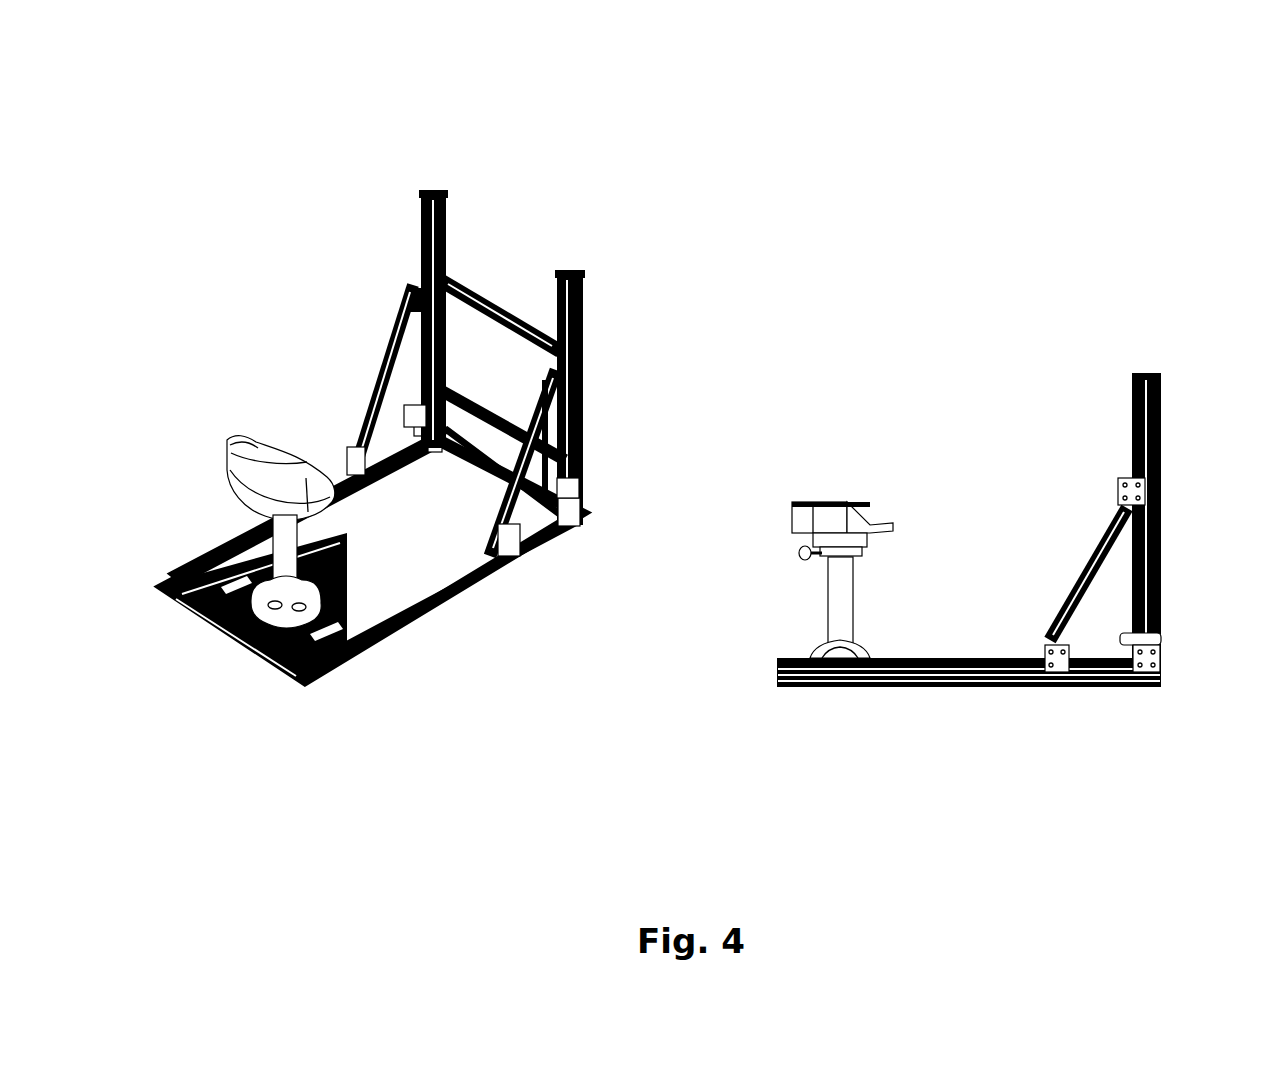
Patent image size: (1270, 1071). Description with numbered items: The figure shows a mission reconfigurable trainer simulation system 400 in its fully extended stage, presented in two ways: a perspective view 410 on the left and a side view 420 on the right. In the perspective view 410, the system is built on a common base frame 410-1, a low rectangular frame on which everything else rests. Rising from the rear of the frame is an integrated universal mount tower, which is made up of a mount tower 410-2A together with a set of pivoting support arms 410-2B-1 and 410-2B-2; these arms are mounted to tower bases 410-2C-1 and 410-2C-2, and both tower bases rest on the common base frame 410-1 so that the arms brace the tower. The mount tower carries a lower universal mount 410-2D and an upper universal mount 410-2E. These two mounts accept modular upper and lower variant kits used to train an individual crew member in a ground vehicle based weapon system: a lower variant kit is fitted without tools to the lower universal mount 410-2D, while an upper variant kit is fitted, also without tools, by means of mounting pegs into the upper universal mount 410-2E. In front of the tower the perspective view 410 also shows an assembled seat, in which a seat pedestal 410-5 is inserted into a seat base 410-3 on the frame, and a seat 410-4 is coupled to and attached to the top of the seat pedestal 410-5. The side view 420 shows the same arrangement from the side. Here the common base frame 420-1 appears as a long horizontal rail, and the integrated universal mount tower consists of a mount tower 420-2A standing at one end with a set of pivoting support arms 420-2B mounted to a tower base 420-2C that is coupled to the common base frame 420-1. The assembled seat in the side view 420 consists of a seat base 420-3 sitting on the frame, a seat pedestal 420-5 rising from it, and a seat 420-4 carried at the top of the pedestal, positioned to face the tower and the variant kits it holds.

The mission reconfigurable trainer simulation system 400 is at (1212, 60).
The perspective view 410 is at (688, 591).
The common base frame 410-1 is at (460, 585).
The mount tower 410-2A is at (582, 395).
The pivoting support arm 410-2B-1 is at (393, 364).
The pivoting support arm 410-2B-2 is at (570, 467).
The tower base 410-2C-1 is at (358, 415).
The tower base 410-2C-2 is at (533, 557).
The lower universal mount 410-2D is at (535, 345).
The upper universal mount 410-2E is at (437, 196).
The seat base 410-3 is at (295, 600).
The seat 410-4 is at (280, 472).
The seat pedestal 410-5 is at (283, 550).
The side view 420 is at (1170, 780).
The common base frame 420-1 is at (903, 670).
The mount tower 420-2A is at (1140, 423).
The pivoting support arms 420-2B is at (1103, 530).
The tower base 420-2C is at (1118, 687).
The seat base 420-3 is at (848, 650).
The seat 420-4 is at (832, 514).
The seat pedestal 420-5 is at (840, 588).